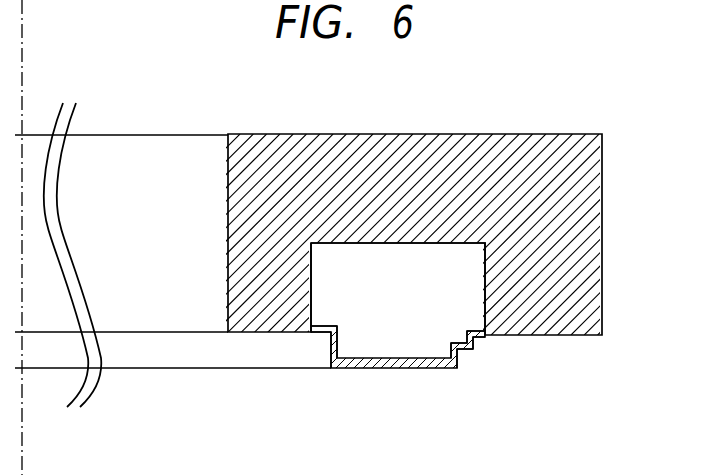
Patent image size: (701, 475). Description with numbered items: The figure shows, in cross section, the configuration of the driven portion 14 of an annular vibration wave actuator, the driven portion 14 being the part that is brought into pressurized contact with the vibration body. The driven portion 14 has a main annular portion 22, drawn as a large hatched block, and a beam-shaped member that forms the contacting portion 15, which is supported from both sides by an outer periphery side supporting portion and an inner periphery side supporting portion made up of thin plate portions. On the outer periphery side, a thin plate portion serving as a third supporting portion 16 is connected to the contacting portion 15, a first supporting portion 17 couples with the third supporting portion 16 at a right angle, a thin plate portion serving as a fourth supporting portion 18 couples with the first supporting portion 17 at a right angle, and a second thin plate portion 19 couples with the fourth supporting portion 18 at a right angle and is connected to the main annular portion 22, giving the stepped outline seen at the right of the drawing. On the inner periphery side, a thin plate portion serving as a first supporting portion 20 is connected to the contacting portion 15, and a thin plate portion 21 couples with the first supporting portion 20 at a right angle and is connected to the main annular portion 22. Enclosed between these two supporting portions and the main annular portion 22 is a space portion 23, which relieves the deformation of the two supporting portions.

The driven portion 14 is at (632, 105).
The contacting portion 15 is at (383, 368).
The third supporting portion 16 is at (463, 358).
The first supporting portion 17 is at (470, 354).
The fourth supporting portion 18 is at (476, 350).
The second thin plate portion 19 is at (478, 339).
The first supporting portion 20 is at (333, 342).
The thin plate portion 21 is at (310, 333).
The main annular portion 22 is at (278, 150).
The space portion 23 is at (373, 265).